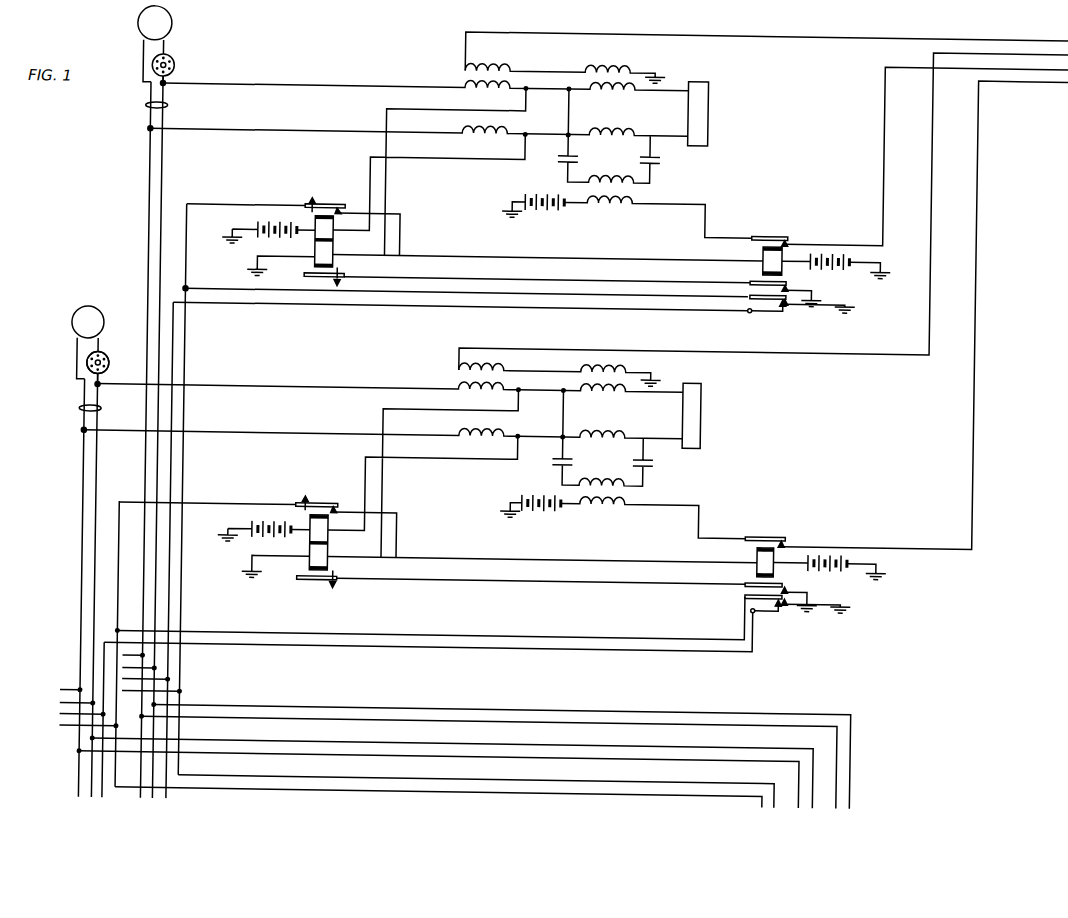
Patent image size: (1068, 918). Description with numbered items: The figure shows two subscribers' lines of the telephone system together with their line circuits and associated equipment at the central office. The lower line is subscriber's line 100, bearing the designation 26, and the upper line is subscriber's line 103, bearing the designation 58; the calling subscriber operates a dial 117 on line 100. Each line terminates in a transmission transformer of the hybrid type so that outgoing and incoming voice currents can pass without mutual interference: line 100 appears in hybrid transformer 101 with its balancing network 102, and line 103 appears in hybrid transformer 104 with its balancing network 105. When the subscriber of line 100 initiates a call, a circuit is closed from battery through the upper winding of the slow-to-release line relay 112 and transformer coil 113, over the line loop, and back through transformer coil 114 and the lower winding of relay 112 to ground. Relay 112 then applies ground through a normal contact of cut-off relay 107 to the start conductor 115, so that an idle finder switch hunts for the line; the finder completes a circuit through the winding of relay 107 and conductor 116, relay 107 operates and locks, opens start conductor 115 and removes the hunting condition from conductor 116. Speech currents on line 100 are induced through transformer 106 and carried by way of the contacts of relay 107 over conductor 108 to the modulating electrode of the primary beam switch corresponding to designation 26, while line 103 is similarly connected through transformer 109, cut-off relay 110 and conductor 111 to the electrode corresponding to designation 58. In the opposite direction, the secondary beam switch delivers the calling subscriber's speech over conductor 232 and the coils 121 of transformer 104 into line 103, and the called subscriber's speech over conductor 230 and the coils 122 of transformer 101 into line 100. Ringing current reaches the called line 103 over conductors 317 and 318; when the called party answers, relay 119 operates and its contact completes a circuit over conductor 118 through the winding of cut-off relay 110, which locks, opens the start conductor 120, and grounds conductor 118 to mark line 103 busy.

The line designation 58 is at (156, 45).
The subscriber's line 103 is at (146, 104).
The conductor 232 is at (578, 29).
The transformer coils 121 is at (590, 66).
The hybrid transformer 104 is at (418, 168).
The balancing network 105 is at (710, 95).
The transformer 109 is at (634, 186).
The relay 119 is at (338, 240).
The conductor 118 is at (218, 202).
The start conductor 120 is at (306, 272).
The cut-off relay 110 is at (763, 245).
The conductor 111 is at (884, 92).
The conductor 230 is at (931, 45).
The line designation 26 is at (90, 345).
The dial 117 is at (114, 362).
The subscriber's line 100 is at (89, 408).
The transformer coils 122 is at (584, 365).
The transformer coil 114 is at (463, 388).
The transformer coil 113 is at (465, 429).
The hybrid transformer 101 is at (505, 471).
The balancing network 102 is at (706, 390).
The transformer 106 is at (631, 491).
The line relay 112 is at (330, 548).
The start conductor 115 is at (304, 571).
The cut-off relay 107 is at (764, 549).
The conductor 108 is at (979, 396).
The conductor 116 is at (441, 645).
The conductor 317 is at (606, 684).
The conductor 318 is at (678, 719).